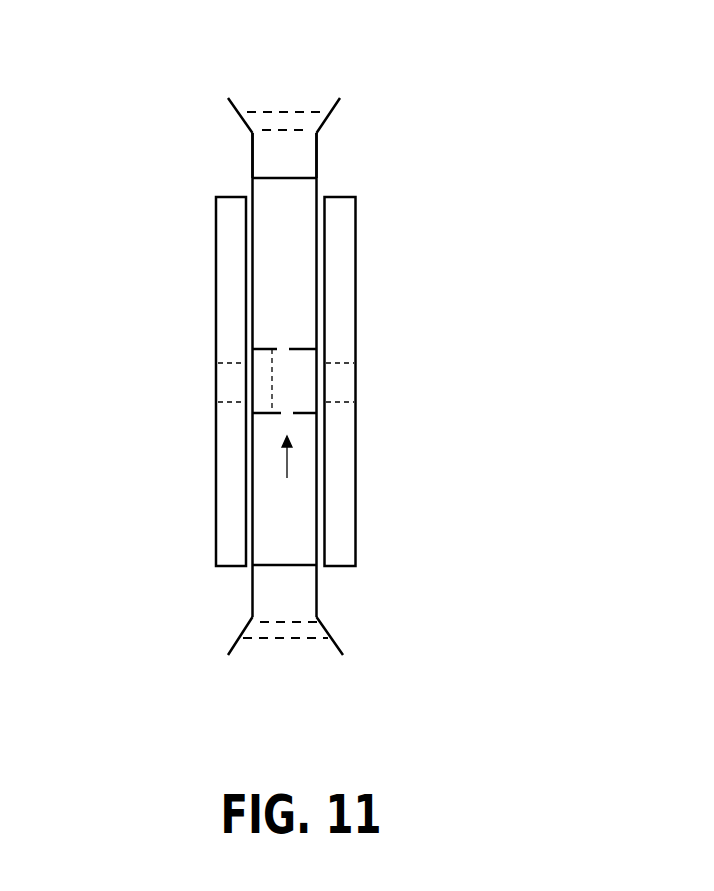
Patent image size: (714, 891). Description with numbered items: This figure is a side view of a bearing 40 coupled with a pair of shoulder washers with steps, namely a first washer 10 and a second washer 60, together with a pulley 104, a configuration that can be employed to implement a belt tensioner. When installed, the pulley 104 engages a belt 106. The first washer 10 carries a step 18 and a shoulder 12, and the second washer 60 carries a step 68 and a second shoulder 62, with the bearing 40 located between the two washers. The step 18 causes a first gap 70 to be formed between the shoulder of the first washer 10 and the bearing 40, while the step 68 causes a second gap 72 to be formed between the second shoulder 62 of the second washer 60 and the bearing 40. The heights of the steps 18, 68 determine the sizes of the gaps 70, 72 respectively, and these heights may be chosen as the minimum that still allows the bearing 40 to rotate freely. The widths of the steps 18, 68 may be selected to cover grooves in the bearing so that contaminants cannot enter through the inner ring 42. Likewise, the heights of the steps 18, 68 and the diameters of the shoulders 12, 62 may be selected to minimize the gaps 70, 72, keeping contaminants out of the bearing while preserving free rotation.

The first shoulder washer 10 is at (157, 381).
The first shoulder 12 is at (179, 253).
The first step 18 is at (253, 413).
The bearing 40 is at (295, 251).
The inner ring 42 is at (286, 473).
The second shoulder washer 60 is at (407, 381).
The second shoulder 62 is at (388, 256).
The second step 68 is at (316, 413).
The first gap 70 is at (238, 156).
The second gap 72 is at (328, 156).
The pulley 104 is at (236, 119).
The belt 106 is at (281, 105).